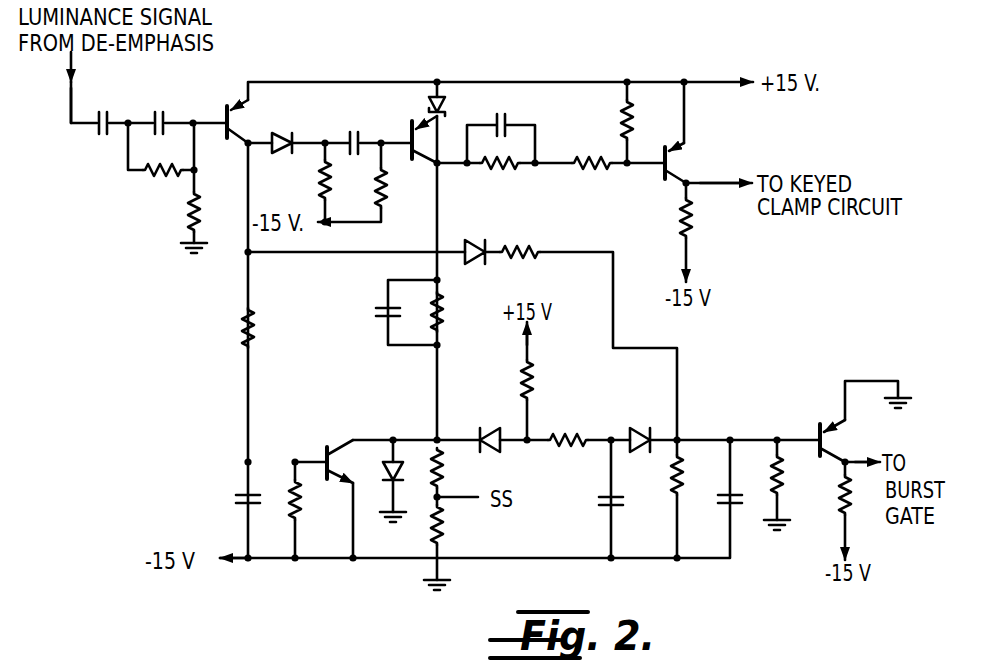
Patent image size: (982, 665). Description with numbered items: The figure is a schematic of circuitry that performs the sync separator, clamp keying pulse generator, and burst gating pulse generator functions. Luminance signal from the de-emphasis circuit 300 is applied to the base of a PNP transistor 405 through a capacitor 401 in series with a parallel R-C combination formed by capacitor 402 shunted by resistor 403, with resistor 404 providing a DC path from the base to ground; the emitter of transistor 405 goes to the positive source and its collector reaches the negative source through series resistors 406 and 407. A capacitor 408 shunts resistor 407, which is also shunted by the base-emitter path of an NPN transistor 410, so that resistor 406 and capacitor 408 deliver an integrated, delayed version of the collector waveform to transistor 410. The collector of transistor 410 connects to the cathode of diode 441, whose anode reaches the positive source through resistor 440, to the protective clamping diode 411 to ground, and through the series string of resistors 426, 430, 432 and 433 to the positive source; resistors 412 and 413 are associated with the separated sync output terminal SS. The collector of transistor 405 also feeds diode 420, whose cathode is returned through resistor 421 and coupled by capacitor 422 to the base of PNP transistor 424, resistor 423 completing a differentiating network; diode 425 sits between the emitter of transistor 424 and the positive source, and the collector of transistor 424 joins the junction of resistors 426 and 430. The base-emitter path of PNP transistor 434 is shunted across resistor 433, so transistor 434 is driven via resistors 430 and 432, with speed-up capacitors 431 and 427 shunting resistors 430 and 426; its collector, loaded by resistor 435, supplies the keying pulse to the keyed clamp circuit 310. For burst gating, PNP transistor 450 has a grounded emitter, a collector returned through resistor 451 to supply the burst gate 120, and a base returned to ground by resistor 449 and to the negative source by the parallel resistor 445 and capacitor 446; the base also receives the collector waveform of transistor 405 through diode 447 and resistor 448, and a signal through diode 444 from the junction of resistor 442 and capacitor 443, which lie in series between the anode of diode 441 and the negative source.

The de-emphasis circuit 300 is at (141, 89).
The capacitor 401 is at (95, 136).
The capacitor 402 is at (166, 112).
The resistor 403 is at (160, 188).
The resistor 404 is at (186, 224).
The PNP transistor 405 is at (226, 140).
The resistor 406 is at (240, 327).
The resistor 407 is at (294, 506).
The capacitor 408 is at (240, 492).
The NPN transistor 410 is at (328, 452).
The diode 411 is at (388, 453).
The resistor 412 is at (455, 466).
The resistor 413 is at (455, 526).
The diode 420 is at (293, 132).
The resistor 421 is at (318, 172).
The capacitor 422 is at (360, 122).
The resistor 423 is at (394, 190).
The PNP transistor 424 is at (415, 130).
The diode 425 is at (448, 122).
The resistor 426 is at (445, 318).
The capacitor 427 is at (376, 320).
The resistor 430 is at (493, 172).
The capacitor 431 is at (504, 120).
The resistor 432 is at (589, 174).
The resistor 433 is at (616, 118).
The PNP transistor 434 is at (680, 147).
The resistor 435 is at (700, 226).
The keyed clamp circuit 310 is at (767, 215).
The resistor 440 is at (540, 368).
The diode 441 is at (498, 432).
The resistor 442 is at (568, 426).
The capacitor 443 is at (600, 508).
The diode 444 is at (648, 428).
The resistor 445 is at (676, 498).
The capacitor 446 is at (722, 508).
The diode 447 is at (484, 250).
The resistor 448 is at (536, 264).
The resistor 449 is at (770, 468).
The PNP transistor 450 is at (828, 428).
The resistor 451 is at (838, 505).
The burst gate 120 is at (885, 509).